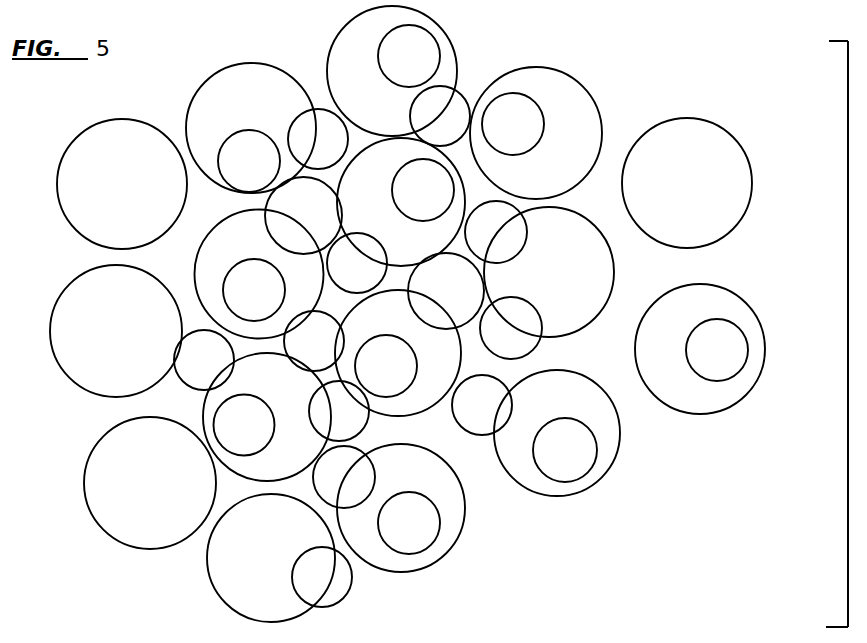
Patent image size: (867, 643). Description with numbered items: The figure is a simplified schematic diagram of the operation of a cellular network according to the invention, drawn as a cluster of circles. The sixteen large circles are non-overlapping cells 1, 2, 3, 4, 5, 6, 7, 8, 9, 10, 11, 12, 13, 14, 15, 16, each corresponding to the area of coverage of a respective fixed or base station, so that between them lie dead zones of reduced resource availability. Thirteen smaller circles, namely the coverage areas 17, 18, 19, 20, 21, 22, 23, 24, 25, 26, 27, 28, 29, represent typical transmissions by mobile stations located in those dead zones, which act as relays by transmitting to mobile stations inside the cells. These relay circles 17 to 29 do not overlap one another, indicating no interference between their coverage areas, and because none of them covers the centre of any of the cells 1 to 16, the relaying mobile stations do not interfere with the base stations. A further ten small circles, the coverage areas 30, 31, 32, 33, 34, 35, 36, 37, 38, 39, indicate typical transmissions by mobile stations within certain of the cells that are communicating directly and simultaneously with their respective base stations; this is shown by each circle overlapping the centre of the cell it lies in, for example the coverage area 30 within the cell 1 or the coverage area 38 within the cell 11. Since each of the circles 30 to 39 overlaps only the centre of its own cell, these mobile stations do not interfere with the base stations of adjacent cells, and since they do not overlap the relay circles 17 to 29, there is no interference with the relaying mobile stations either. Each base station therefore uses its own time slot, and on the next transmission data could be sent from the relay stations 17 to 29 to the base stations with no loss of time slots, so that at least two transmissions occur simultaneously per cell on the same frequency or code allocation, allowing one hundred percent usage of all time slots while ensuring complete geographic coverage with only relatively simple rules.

The cell 1 is at (251, 128).
The cell 2 is at (392, 71).
The cell 3 is at (536, 133).
The cell 4 is at (401, 202).
The cell 5 is at (259, 274).
The cell 6 is at (549, 272).
The cell 7 is at (398, 353).
The cell 8 is at (267, 417).
The cell 9 is at (401, 508).
The cell 10 is at (557, 433).
The cell 11 is at (700, 349).
The cell 12 is at (687, 183).
The cell 13 is at (271, 558).
The cell 14 is at (150, 483).
The cell 15 is at (116, 331).
The cell 16 is at (122, 184).
The mobile relay station coverage area 17 is at (318, 139).
The mobile relay station coverage area 18 is at (440, 116).
The mobile relay station coverage area 19 is at (357, 263).
The mobile relay station coverage area 20 is at (496, 232).
The mobile relay station coverage area 21 is at (446, 291).
The mobile relay station coverage area 22 is at (511, 328).
The mobile relay station coverage area 23 is at (482, 405).
The mobile relay station coverage area 24 is at (344, 477).
The mobile relay station coverage area 25 is at (339, 411).
The mobile relay station coverage area 26 is at (314, 341).
The mobile relay station coverage area 27 is at (204, 360).
The mobile relay station coverage area 28 is at (322, 577).
The mobile relay station coverage area 29 is at (303, 215).
The in-cell mobile station coverage area 30 is at (249, 161).
The in-cell mobile station coverage area 31 is at (409, 56).
The in-cell mobile station coverage area 32 is at (513, 124).
The in-cell mobile station coverage area 33 is at (423, 190).
The in-cell mobile station coverage area 34 is at (254, 290).
The in-cell mobile station coverage area 35 is at (244, 425).
The in-cell mobile station coverage area 36 is at (409, 523).
The in-cell mobile station coverage area 37 is at (565, 450).
The in-cell mobile station coverage area 38 is at (717, 350).
The in-cell mobile station coverage area 39 is at (386, 366).